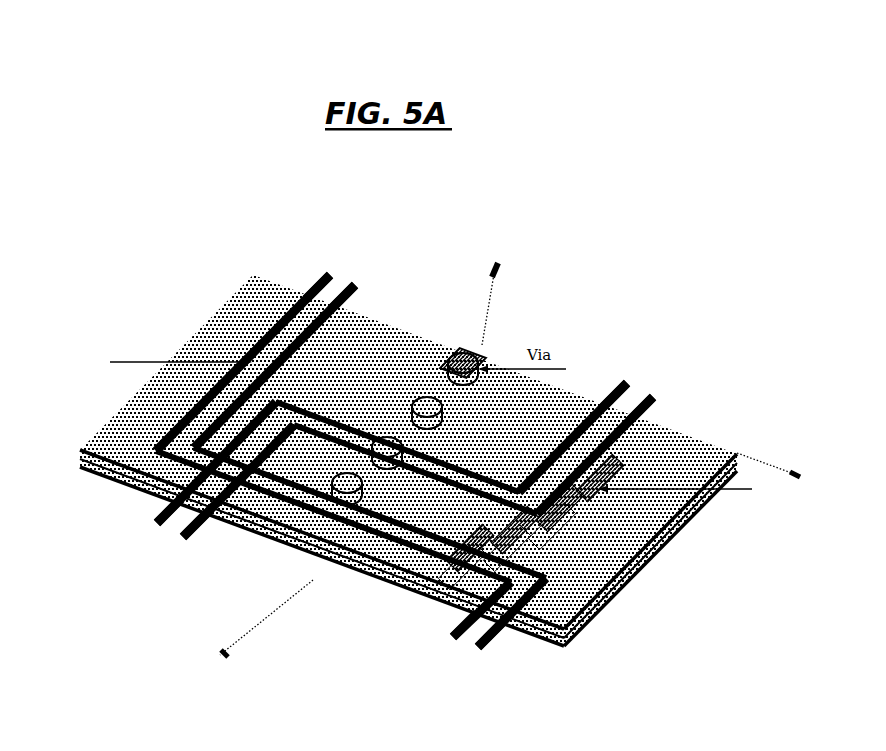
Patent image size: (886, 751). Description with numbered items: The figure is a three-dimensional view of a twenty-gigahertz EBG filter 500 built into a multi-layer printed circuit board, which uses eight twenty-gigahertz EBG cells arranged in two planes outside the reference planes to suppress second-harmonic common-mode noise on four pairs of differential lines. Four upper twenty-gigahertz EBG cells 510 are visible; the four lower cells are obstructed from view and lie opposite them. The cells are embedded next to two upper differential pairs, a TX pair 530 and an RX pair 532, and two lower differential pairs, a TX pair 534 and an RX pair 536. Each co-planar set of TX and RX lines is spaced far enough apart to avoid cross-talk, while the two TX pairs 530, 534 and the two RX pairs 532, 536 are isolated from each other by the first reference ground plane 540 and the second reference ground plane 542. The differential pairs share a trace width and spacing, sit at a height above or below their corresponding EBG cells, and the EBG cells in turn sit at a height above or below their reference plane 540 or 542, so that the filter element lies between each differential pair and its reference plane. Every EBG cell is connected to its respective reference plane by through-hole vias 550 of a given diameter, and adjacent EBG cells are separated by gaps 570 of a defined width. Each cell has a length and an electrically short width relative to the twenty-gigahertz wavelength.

The 20-GHz EBG filter 500 is at (718, 242).
The upper 20-GHz EBG cells 510 is at (545, 525).
The upper pair of TX differential lines 530 is at (380, 258).
The upper pair of RX differential lines 532 is at (690, 368).
The lower pair of TX differential lines 534 is at (125, 575).
The lower pair of RX differential lines 536 is at (438, 681).
The reference ground plane Ref 1 540 is at (563, 604).
The reference ground plane Ref 2 542 is at (663, 551).
The through-hole vias 550 is at (335, 290).
The gaps between adjacent 20-GHz EBG cells 570 is at (520, 535).